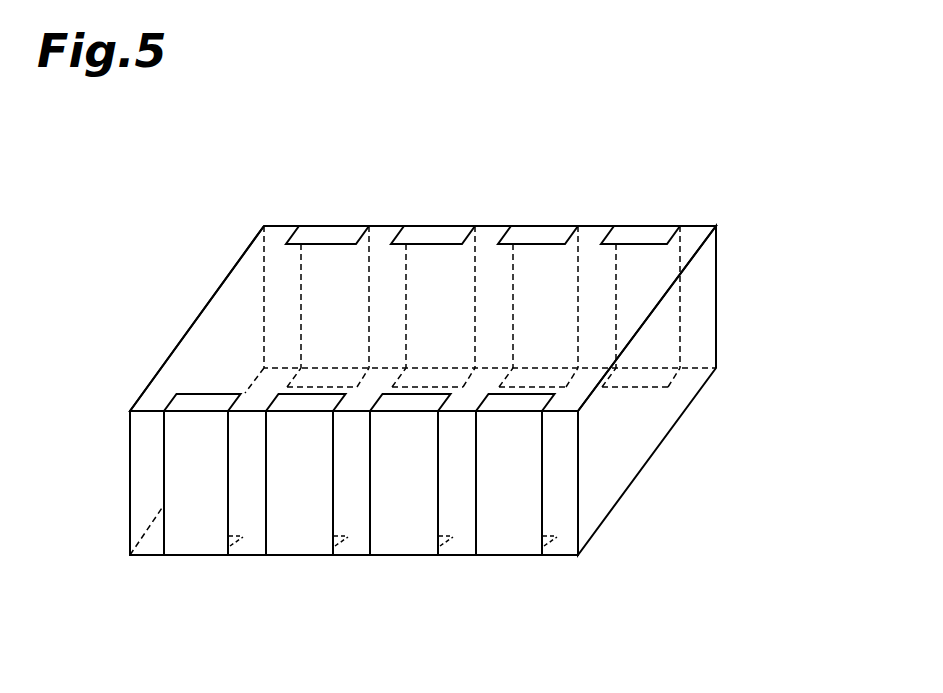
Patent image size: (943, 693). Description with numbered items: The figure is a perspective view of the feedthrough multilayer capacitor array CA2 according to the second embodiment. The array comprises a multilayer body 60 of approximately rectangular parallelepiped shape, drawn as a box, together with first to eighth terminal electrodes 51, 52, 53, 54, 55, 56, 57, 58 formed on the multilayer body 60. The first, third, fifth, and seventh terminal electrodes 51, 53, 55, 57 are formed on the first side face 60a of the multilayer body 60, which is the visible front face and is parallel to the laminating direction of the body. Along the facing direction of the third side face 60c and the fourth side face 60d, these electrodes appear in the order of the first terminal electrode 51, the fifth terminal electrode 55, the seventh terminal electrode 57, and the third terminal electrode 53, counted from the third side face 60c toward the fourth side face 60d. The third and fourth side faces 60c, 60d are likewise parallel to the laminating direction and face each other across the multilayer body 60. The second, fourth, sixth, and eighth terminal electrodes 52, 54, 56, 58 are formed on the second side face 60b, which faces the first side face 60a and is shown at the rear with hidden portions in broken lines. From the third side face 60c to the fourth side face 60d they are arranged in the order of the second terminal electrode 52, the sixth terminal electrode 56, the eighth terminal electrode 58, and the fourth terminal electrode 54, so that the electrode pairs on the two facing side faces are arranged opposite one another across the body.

The feedthrough multilayer capacitor array CA2 is at (744, 165).
The first terminal electrode 51 is at (198, 543).
The second terminal electrode 52 is at (328, 237).
The third terminal electrode 53 is at (508, 545).
The fourth terminal electrode 54 is at (640, 235).
The fifth terminal electrode 55 is at (298, 543).
The sixth terminal electrode 56 is at (433, 237).
The seventh terminal electrode 57 is at (405, 543).
The eighth terminal electrode 58 is at (538, 235).
The multilayer body 60 is at (128, 483).
The first side face 60a is at (352, 518).
The second side face 60b is at (487, 293).
The third side face 60c is at (245, 285).
The fourth side face 60d is at (698, 340).